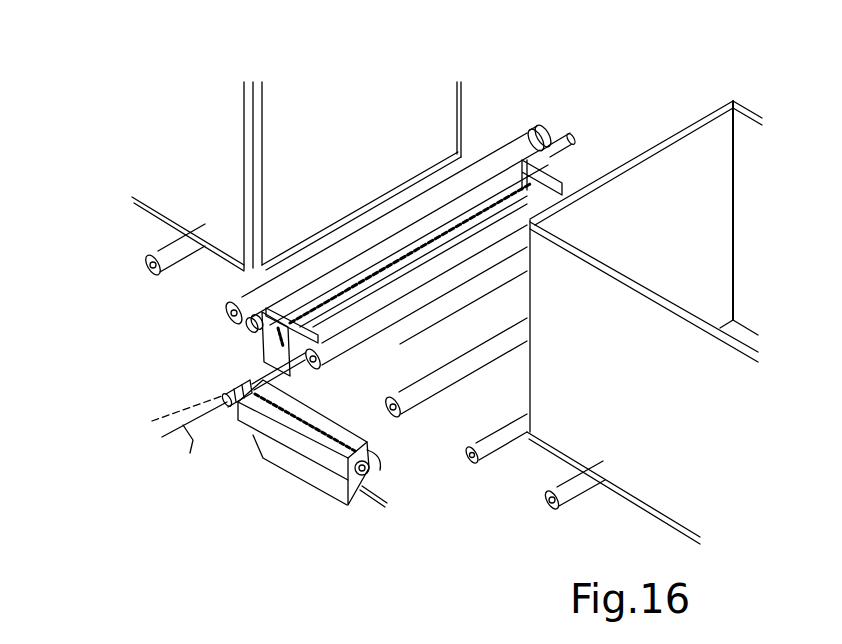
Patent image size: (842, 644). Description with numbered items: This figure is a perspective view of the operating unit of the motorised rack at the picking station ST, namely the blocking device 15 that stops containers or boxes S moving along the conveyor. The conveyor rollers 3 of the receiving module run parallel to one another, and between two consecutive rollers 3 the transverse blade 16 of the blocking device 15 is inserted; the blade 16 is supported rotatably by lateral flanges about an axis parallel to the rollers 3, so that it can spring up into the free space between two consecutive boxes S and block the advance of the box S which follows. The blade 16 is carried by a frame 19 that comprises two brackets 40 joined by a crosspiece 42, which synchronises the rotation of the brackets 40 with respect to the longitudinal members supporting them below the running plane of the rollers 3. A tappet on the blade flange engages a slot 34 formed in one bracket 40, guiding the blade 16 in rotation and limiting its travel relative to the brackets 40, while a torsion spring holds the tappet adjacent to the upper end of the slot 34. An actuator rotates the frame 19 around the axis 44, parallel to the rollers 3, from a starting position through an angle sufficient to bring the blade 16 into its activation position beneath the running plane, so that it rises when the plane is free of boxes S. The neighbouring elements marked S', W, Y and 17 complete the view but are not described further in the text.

The conveyor roller 3 is at (470, 177).
The blocking device 15 is at (242, 472).
The transverse blade 16 is at (318, 301).
The bottom rail 17 is at (527, 433).
The frame 19 is at (223, 370).
The slot 34 is at (262, 343).
The bracket 40 is at (560, 190).
The crosspiece 42 is at (413, 262).
The axis 44 is at (237, 333).
The container or box S is at (296, 176).
The side panel S' is at (646, 266).
The web W is at (157, 425).
The liner Y is at (192, 440).
The picking station ST is at (247, 525).